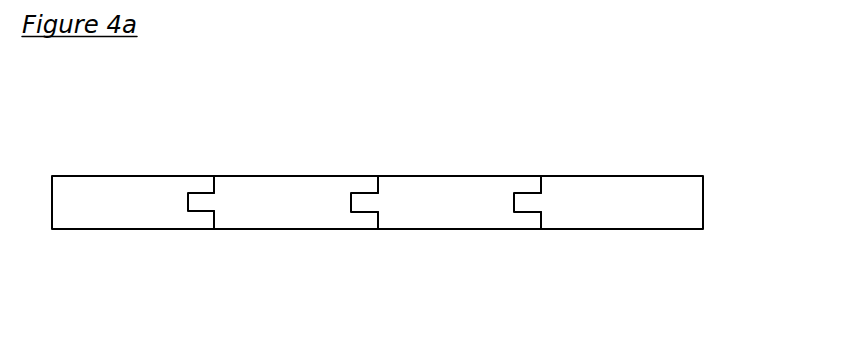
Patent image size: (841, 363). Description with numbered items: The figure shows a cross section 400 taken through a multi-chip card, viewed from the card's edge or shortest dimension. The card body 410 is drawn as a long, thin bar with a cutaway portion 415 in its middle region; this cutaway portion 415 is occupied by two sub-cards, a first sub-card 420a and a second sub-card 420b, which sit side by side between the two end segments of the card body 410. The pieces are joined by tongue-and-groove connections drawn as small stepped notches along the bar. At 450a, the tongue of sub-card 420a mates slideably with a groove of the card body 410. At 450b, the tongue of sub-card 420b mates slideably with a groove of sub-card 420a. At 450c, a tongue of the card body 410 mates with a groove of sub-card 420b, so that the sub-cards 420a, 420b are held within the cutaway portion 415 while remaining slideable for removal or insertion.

The cross section 400 is at (411, 93).
The card body 410 is at (127, 193).
The cutaway portion 415 is at (214, 230).
The sub-card 420a is at (275, 203).
The sub-card 420b is at (437, 203).
The mating location of sub-card tongue and card body groove 450a is at (188, 202).
The mating location of sub-card tongues and grooves 450b is at (363, 202).
The mating location of card body tongue and sub-card groove 450c is at (513, 202).